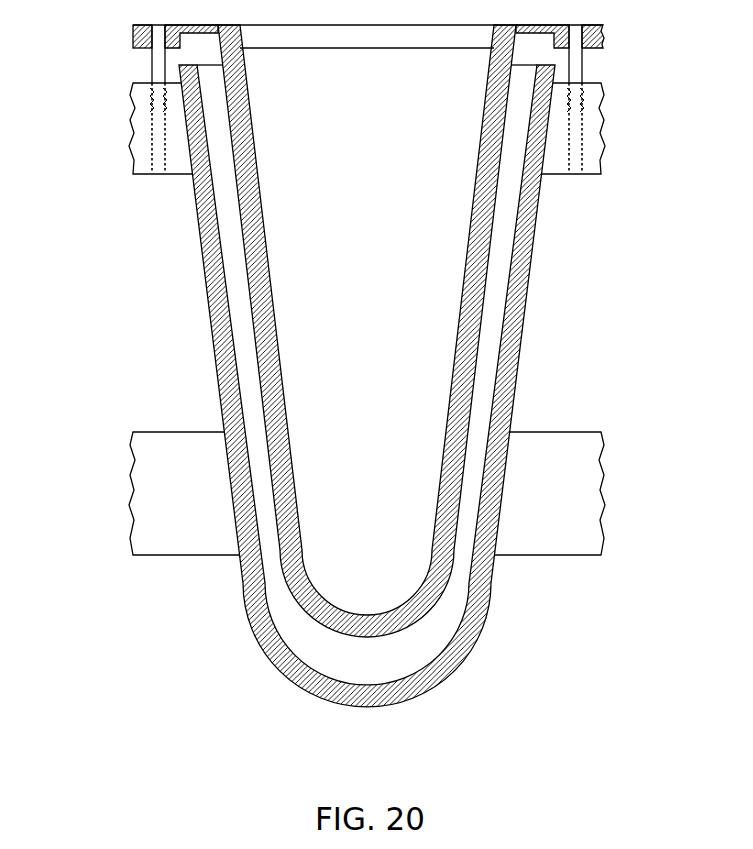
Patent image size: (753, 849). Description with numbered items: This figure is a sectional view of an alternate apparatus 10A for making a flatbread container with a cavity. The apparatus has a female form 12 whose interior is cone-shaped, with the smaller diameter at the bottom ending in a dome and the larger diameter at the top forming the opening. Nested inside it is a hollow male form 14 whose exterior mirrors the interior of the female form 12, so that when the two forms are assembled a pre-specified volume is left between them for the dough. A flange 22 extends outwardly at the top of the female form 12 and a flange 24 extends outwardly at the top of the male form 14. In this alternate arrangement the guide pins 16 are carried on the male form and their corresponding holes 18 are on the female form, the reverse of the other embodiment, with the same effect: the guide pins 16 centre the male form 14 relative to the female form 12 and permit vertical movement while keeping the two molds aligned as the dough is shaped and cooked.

The alternate apparatus 10A is at (557, 327).
The female form 12 is at (220, 384).
The male form 14 is at (293, 595).
The guide pins 16 is at (158, 67).
The holes 18 is at (154, 177).
The flange 22 is at (133, 38).
The flange 24 is at (179, 163).